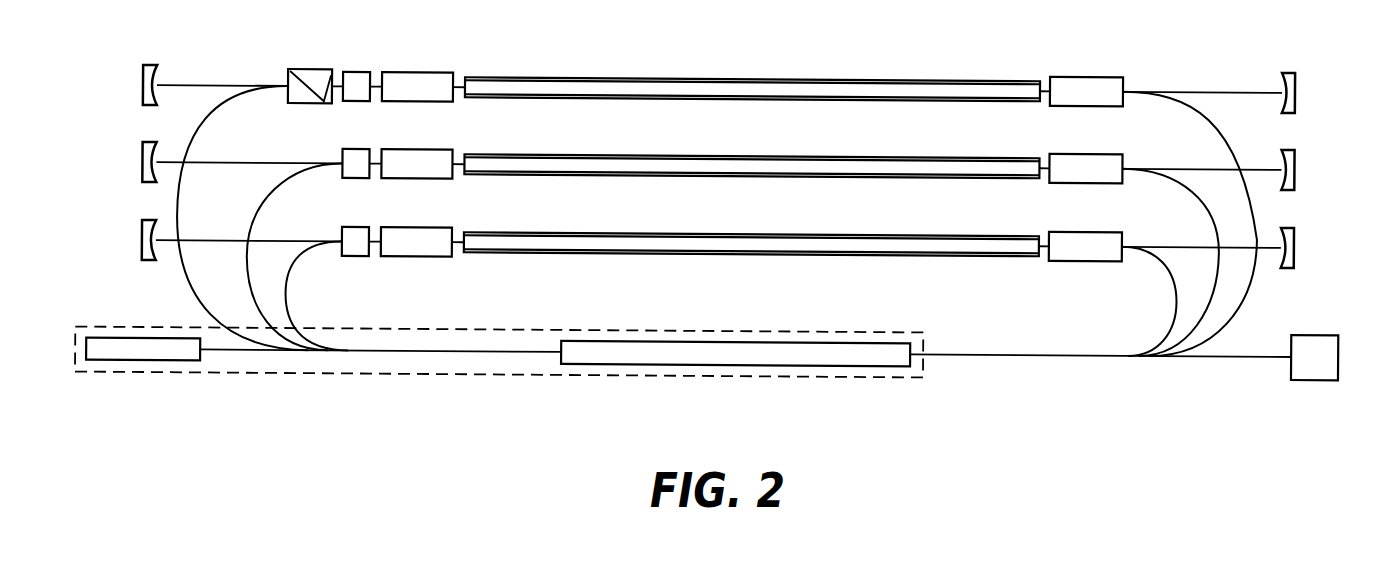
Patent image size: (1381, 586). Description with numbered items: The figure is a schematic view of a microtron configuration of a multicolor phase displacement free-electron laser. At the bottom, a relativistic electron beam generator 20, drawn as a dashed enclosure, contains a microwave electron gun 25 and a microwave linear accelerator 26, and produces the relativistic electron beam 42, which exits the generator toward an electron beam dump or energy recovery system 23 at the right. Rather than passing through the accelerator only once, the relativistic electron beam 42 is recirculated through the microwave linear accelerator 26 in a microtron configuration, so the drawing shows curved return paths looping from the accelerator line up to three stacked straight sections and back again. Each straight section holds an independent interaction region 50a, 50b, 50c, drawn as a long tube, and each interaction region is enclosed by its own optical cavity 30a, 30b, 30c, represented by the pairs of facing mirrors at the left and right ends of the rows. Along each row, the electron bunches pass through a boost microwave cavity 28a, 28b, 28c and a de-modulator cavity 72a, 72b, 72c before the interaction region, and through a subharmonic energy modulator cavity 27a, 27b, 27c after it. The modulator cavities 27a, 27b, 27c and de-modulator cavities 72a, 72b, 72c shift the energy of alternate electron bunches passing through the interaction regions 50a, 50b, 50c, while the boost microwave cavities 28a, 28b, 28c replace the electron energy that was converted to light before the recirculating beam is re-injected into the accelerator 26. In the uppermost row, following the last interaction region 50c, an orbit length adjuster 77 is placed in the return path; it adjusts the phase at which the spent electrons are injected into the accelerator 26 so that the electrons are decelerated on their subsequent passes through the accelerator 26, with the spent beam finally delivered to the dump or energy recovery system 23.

The relativistic electron beam generator 20 is at (365, 372).
The electron beam dump or energy recovery system 23 is at (1302, 372).
The microwave electron gun 25 is at (126, 361).
The microwave linear accelerator 26 is at (612, 362).
The subharmonic energy modulator cavity 27a is at (1101, 226).
The subharmonic energy modulator cavity 27b is at (1101, 148).
The subharmonic energy modulator cavity 27c is at (1101, 71).
The boost microwave cavity 28a is at (358, 226).
The boost microwave cavity 28b is at (358, 71).
The boost microwave cavity 28c is at (358, 148).
The optical cavity 30a is at (143, 229).
The optical cavity 30b is at (143, 151).
The optical cavity 30c is at (143, 74).
The relativistic electron beam 42 is at (965, 350).
The interaction region 50a is at (780, 230).
The interaction region 50b is at (780, 152).
The interaction region 50c is at (780, 75).
The de-modulator cavity 72a is at (438, 226).
The de-modulator cavity 72b is at (438, 148).
The de-modulator cavity 72c is at (438, 71).
The orbit length adjuster 77 is at (301, 68).